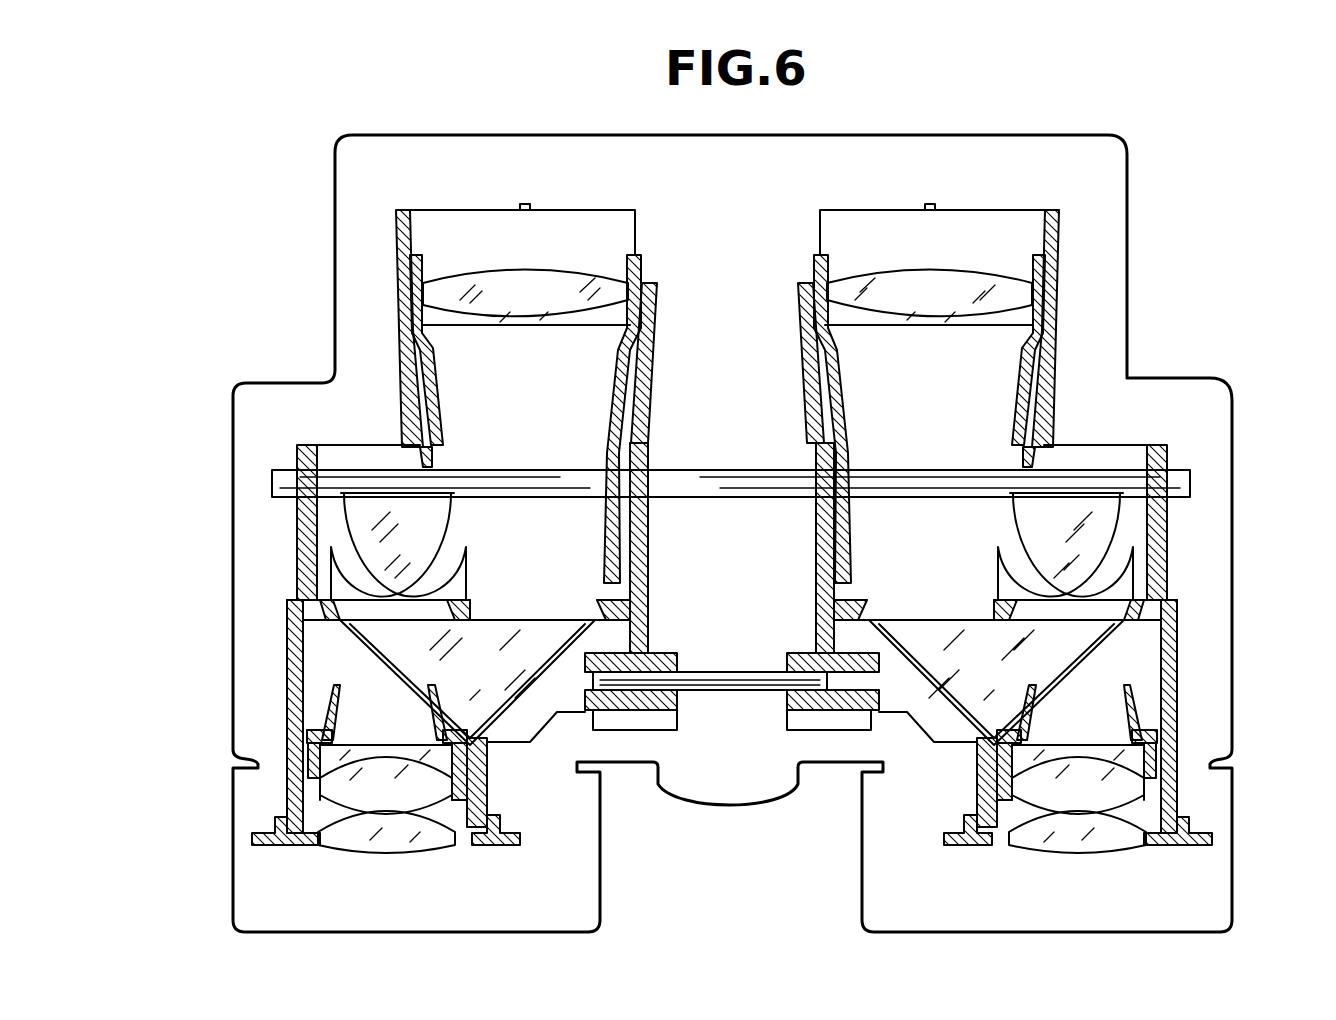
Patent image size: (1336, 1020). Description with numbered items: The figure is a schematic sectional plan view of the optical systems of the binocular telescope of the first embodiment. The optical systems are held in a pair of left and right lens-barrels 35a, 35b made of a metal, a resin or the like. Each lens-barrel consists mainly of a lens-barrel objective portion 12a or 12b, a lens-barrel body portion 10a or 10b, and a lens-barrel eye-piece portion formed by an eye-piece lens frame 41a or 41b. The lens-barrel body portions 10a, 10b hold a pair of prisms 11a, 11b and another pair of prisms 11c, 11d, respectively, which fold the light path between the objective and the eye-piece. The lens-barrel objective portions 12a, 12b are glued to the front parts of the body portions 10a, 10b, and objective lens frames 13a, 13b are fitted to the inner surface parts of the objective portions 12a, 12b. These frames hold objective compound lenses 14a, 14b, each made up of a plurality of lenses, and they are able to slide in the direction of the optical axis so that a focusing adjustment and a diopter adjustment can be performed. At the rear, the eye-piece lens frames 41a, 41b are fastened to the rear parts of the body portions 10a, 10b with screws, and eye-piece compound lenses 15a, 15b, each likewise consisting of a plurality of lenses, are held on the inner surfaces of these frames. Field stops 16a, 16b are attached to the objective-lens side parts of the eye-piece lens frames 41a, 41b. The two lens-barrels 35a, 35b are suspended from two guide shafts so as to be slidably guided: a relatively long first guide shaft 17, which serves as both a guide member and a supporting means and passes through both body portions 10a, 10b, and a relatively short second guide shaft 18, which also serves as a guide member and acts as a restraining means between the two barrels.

The lens-barrel body portion 10a is at (1163, 442).
The lens-barrel body portion 10b is at (300, 558).
The prism 11a is at (1095, 530).
The prism 11b is at (1074, 647).
The prism 11c is at (358, 522).
The prism 11d is at (390, 647).
The lens-barrel objective portion 12a is at (1053, 243).
The lens-barrel objective portion 12b is at (402, 237).
The objective lens frame 13a is at (1040, 300).
The objective lens frame 13b is at (423, 295).
The objective lens 14a is at (980, 277).
The objective lens 14b is at (473, 306).
The eye-piece lens 15a is at (1142, 822).
The eye-piece lens 15b is at (322, 822).
The field stop 16a is at (1131, 690).
The field stop 16b is at (333, 690).
The first guide shaft 17 is at (1090, 478).
The second guide shaft 18 is at (722, 690).
The lens-barrel 35a is at (1179, 570).
The lens-barrel 35b is at (286, 627).
The eye-piece lens frame 41a is at (1189, 839).
The eye-piece lens frame 41b is at (275, 839).